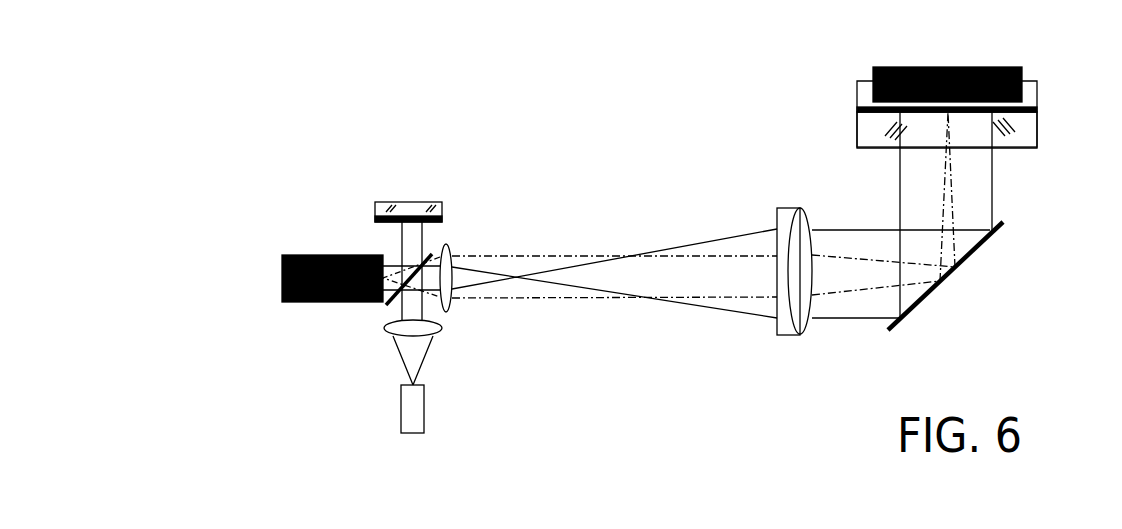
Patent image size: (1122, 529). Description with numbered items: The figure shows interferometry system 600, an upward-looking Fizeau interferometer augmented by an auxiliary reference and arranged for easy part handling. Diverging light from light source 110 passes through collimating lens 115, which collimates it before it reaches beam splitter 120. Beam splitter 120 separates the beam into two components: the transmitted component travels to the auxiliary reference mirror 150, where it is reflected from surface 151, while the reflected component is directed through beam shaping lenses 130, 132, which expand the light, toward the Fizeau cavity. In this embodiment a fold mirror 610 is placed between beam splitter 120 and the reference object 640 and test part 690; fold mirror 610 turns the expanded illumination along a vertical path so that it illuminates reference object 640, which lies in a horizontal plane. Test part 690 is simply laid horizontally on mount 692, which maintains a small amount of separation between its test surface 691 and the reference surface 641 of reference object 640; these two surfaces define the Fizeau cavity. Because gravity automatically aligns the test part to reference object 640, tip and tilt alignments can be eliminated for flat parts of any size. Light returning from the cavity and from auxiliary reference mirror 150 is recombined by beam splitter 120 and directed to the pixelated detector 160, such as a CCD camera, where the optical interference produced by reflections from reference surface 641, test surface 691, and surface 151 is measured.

The interferometry system 600 is at (158, 234).
The light source 110 is at (424, 397).
The collimating lens 115 is at (433, 334).
The beam splitter 120 is at (388, 305).
The beam shaping lens 130 is at (447, 310).
The beam shaping lens 132 is at (795, 337).
The auxiliary reference mirror 150 is at (442, 208).
The surface of auxiliary reference mirror 151 is at (375, 219).
The pixelated detector 160 is at (323, 302).
The fold mirror 610 is at (922, 305).
The reference object 640 is at (1038, 130).
The reference surface 641 is at (1030, 104).
The test part 690 is at (893, 67).
The test surface 691 is at (857, 110).
The mount 692 is at (1037, 81).